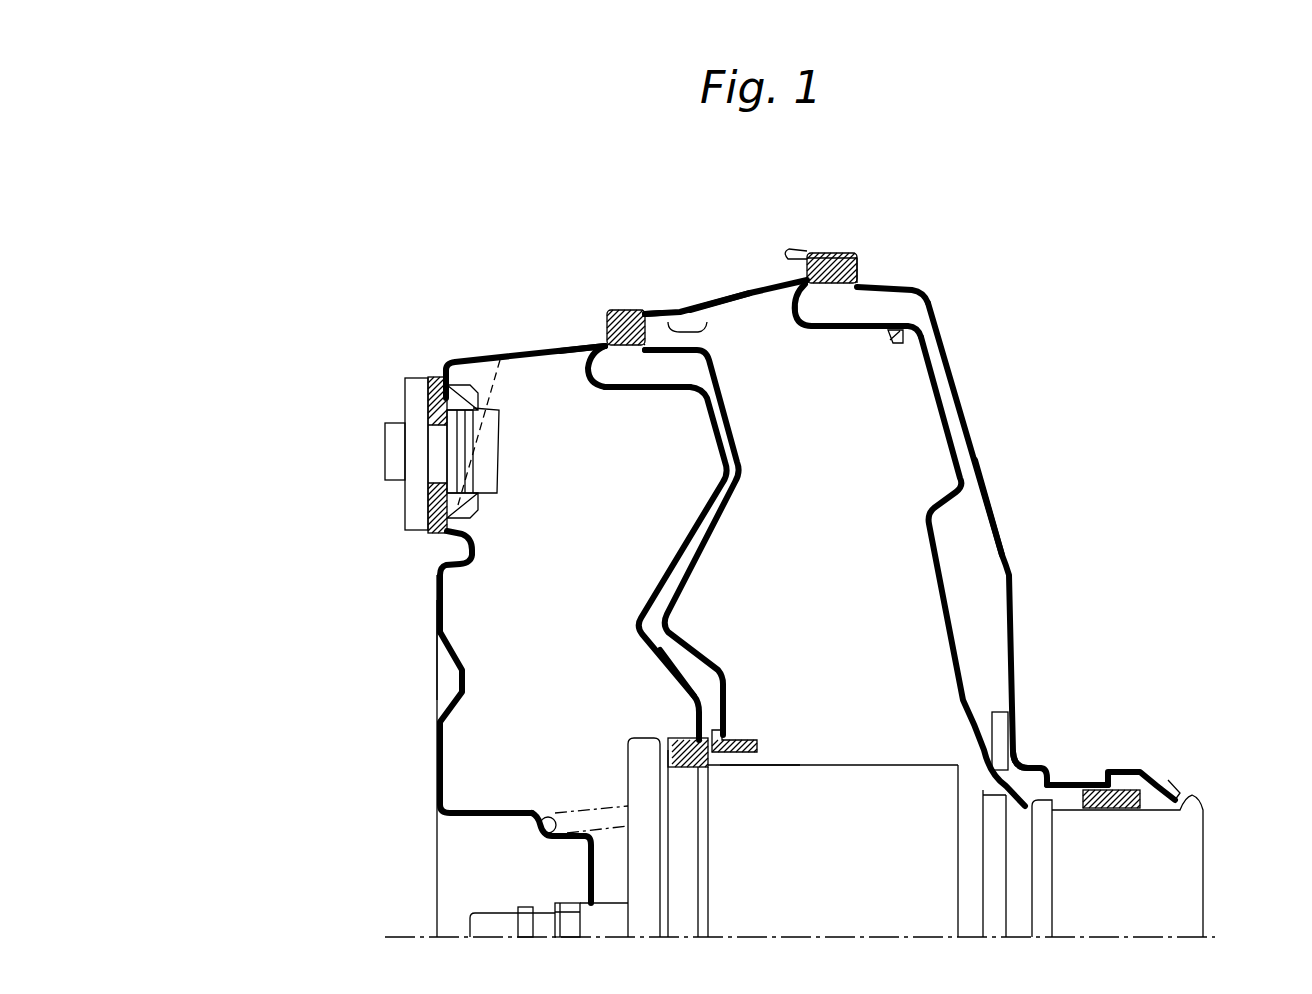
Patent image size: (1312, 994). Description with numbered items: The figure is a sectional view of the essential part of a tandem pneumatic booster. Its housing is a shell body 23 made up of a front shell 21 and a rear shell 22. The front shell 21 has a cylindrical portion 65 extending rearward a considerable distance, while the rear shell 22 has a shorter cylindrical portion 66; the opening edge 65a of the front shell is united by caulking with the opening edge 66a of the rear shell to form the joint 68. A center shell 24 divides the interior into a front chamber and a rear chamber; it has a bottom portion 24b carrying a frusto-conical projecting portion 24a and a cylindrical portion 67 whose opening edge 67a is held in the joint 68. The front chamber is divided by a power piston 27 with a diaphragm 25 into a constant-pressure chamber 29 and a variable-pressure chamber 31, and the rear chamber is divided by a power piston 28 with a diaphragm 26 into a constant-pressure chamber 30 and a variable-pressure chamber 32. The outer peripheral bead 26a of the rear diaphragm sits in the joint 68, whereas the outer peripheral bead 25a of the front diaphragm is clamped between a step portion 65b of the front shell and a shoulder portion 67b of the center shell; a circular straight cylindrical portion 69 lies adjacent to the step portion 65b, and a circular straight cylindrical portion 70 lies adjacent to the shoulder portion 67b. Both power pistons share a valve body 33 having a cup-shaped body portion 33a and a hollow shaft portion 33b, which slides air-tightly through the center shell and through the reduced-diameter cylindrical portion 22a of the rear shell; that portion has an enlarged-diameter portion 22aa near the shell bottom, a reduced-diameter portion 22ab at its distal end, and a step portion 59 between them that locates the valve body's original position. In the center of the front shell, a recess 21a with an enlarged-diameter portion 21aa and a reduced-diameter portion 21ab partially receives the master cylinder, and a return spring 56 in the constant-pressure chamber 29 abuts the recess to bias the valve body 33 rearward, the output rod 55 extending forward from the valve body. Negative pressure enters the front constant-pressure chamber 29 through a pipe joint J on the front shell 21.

The pipe joint J is at (385, 452).
The front shell 21 is at (433, 733).
The recess 21a is at (492, 828).
The enlarged-diameter portion 21aa is at (440, 815).
The reduced-diameter portion 21ab is at (563, 848).
The rear shell 22 is at (980, 430).
The reduced-diameter cylindrical portion 22a is at (1090, 777).
The enlarged-diameter portion 22aa is at (1040, 768).
The reduced-diameter portion 22ab is at (1078, 775).
The shell body 23 is at (430, 598).
The center shell 24 is at (722, 532).
The projecting portion 24a is at (700, 297).
The bottom portion 24b is at (625, 347).
The diaphragm 25 is at (670, 397).
The outer peripheral bead 25a is at (600, 360).
The diaphragm 26 is at (863, 330).
The outer peripheral bead 26a is at (823, 270).
The power piston 27 is at (651, 591).
The power piston 28 is at (921, 518).
The constant-pressure chamber 29 is at (492, 642).
The constant-pressure chamber 30 is at (753, 675).
The variable-pressure chamber 31 is at (690, 663).
The variable-pressure chamber 32 is at (975, 537).
The valve body 33 is at (937, 765).
The body portion 33a is at (858, 790).
The hollow shaft portion 33b is at (1172, 870).
The output rod 55 is at (470, 920).
The return spring 56 is at (580, 822).
The step portion 59 is at (1062, 773).
The cylindrical portion 65 is at (490, 360).
The opening edge 65a is at (800, 263).
The step portion 65b is at (607, 343).
The cylindrical portion 66 is at (903, 287).
The opening edge 66a is at (857, 270).
The cylindrical portion 67 is at (750, 297).
The opening edge 67a is at (817, 263).
The shoulder portion 67b is at (645, 342).
The joint 68 is at (842, 244).
The circular straight cylindrical portion 69 is at (620, 323).
The circular straight cylindrical portion 70 is at (680, 307).